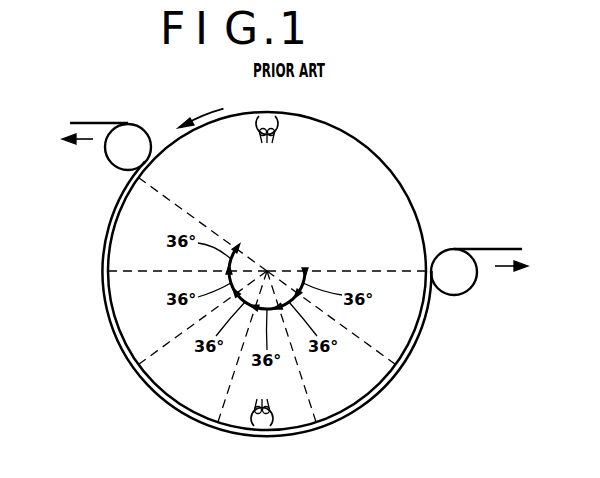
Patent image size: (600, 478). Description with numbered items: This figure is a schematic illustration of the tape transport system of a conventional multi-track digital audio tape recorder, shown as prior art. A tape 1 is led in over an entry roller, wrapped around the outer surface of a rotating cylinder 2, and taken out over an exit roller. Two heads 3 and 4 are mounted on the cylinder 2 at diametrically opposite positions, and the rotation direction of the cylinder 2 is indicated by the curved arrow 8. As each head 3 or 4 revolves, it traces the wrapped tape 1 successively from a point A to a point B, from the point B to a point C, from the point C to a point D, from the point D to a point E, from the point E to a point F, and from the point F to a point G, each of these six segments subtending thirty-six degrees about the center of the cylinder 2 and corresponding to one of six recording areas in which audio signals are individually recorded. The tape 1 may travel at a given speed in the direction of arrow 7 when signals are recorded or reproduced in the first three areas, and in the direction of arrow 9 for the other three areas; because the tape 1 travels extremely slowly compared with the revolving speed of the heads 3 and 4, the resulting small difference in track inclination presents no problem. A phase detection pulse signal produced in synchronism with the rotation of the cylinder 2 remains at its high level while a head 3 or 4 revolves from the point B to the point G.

The tape 1 is at (490, 249).
The cylinder 2 is at (411, 204).
The head 3 is at (278, 127).
The head 4 is at (273, 402).
The arrow 7 is at (498, 268).
The cylinder rotation direction 8 is at (197, 121).
The arrow 9 is at (92, 141).
The point A is at (131, 186).
The point B is at (108, 275).
The point C is at (136, 357).
The point D is at (216, 424).
The point E is at (320, 424).
The point F is at (402, 358).
The point G is at (431, 266).